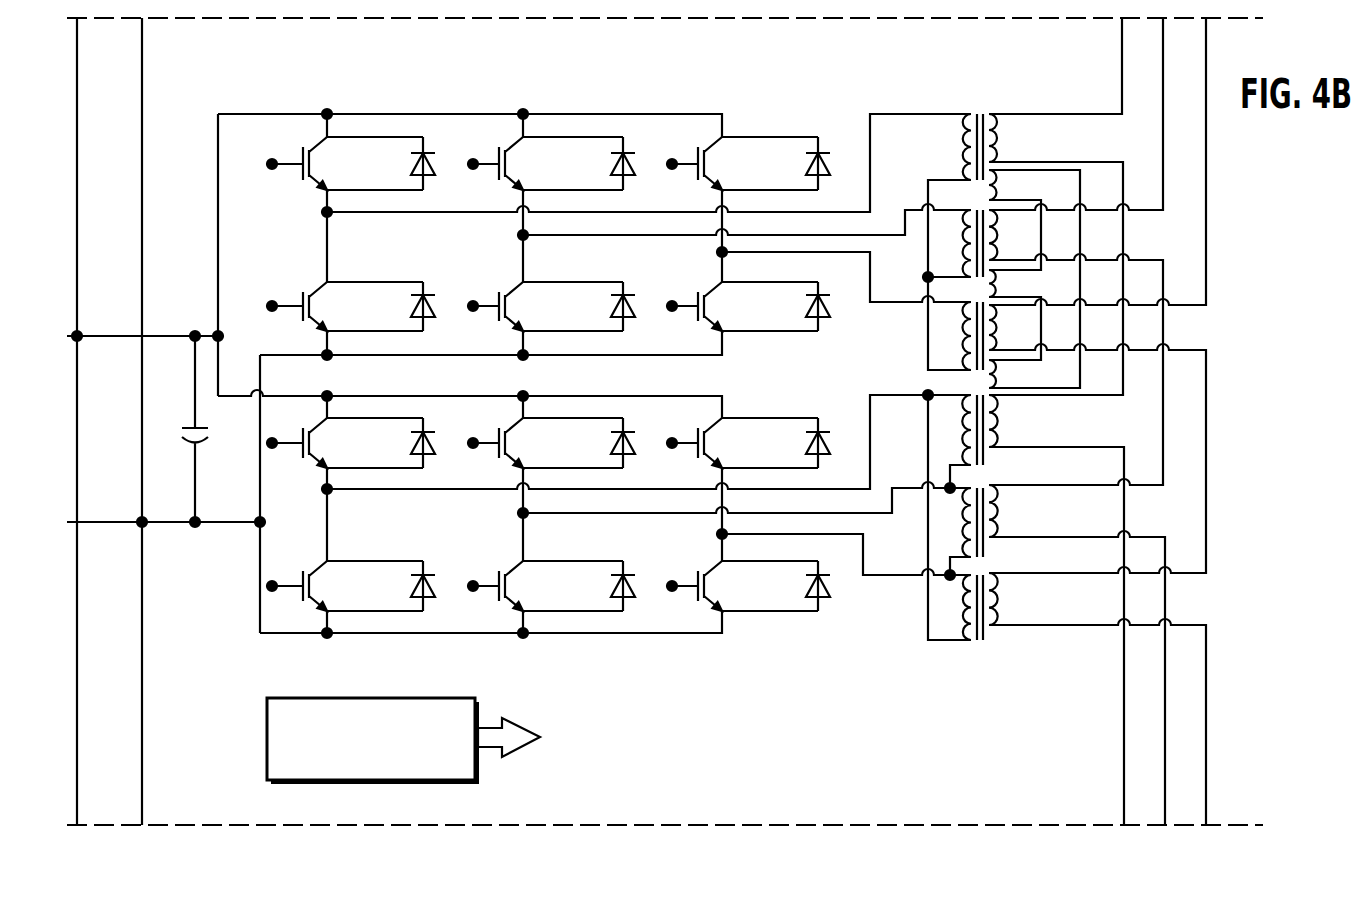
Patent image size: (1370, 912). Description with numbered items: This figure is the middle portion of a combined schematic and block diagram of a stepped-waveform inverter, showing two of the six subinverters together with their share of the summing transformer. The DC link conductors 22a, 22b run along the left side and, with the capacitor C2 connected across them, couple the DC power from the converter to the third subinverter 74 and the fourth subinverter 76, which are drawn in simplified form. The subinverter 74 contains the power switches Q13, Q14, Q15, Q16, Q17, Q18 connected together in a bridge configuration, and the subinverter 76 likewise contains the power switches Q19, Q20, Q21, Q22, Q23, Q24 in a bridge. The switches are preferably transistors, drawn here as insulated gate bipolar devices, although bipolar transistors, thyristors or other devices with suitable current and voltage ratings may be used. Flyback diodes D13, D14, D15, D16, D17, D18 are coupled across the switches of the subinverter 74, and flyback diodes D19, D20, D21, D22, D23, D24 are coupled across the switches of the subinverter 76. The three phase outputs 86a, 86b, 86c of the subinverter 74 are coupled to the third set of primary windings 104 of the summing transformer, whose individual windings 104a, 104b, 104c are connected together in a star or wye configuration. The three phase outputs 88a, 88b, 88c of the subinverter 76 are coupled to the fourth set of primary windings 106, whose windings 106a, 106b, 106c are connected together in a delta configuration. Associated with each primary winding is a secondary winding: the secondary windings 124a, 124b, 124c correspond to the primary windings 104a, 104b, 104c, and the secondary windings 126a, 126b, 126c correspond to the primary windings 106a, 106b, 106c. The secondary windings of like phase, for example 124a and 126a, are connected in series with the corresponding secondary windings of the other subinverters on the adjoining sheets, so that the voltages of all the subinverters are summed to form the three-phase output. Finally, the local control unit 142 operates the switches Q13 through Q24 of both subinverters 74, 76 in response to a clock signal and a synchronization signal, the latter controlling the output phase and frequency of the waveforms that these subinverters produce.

The DC link conductor 22a is at (78, 340).
The DC link conductor 22b is at (78, 526).
The capacitor C2 is at (192, 427).
The third subinverter 74 is at (636, 362).
The fourth subinverter 76 is at (466, 390).
The power switch Q13 is at (298, 183).
The power switch Q14 is at (304, 290).
The power switch Q15 is at (498, 182).
The power switch Q16 is at (499, 290).
The power switch Q17 is at (710, 150).
The power switch Q18 is at (700, 295).
The power switch Q19 is at (312, 432).
The power switch Q20 is at (312, 545).
The power switch Q21 is at (502, 430).
The power switch Q22 is at (503, 574).
The power switch Q23 is at (700, 430).
The power switch Q24 is at (700, 575).
The flyback diode D13 is at (433, 152).
The flyback diode D14 is at (411, 298).
The flyback diode D15 is at (611, 160).
The flyback diode D16 is at (611, 300).
The flyback diode D17 is at (845, 118).
The flyback diode D18 is at (806, 300).
The flyback diode D19 is at (432, 452).
The flyback diode D20 is at (411, 580).
The flyback diode D21 is at (611, 435).
The flyback diode D22 is at (611, 579).
The flyback diode D23 is at (806, 435).
The flyback diode D24 is at (806, 579).
The phase output 86a is at (322, 215).
The phase output 86b is at (518, 236).
The phase output 86c is at (717, 252).
The phase output 88a is at (330, 494).
The phase output 88b is at (518, 513).
The phase output 88c is at (717, 534).
The third set of primary windings 104 is at (910, 308).
The primary winding 104a is at (962, 140).
The primary winding 104b is at (962, 248).
The primary winding 104c is at (962, 352).
The secondary winding 124a is at (1000, 145).
The secondary winding 124b is at (1000, 232).
The secondary winding 124c is at (1002, 330).
The fourth set of primary windings 106 is at (905, 388).
The primary winding 106a is at (962, 445).
The primary winding 106b is at (962, 515).
The primary winding 106c is at (962, 605).
The secondary winding 126a is at (1000, 422).
The secondary winding 126b is at (1002, 512).
The secondary winding 126c is at (1002, 600).
The local control unit 142 is at (267, 732).